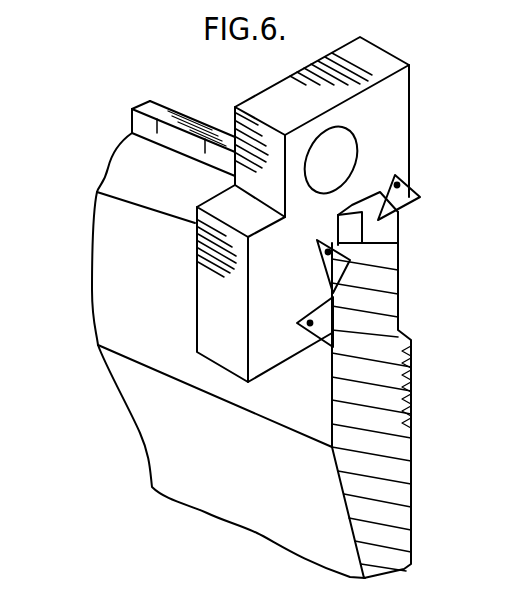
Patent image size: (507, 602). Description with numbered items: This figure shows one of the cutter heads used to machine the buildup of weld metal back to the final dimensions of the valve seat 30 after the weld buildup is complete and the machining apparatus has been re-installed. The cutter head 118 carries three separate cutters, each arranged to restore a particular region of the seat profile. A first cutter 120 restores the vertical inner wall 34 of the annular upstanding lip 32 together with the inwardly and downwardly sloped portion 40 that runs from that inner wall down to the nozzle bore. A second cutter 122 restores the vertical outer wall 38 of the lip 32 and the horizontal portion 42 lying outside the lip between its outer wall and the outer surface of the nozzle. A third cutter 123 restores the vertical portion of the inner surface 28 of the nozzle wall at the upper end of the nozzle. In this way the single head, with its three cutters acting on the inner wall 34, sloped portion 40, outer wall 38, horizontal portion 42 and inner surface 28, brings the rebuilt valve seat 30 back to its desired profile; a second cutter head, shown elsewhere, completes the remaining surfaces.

The inner surface 28 is at (302, 412).
The valve seat 30 is at (93, 232).
The annular upstanding lip 32 is at (177, 108).
The vertical inner wall 34 is at (132, 110).
The vertical outer wall 38 is at (405, 190).
The inwardly and downwardly sloped portion 40 is at (123, 158).
The horizontal portion 42 is at (398, 228).
The cutter head 118 is at (410, 88).
The first cutter 120 is at (349, 266).
The second cutter 122 is at (380, 217).
The third cutter 123 is at (334, 328).